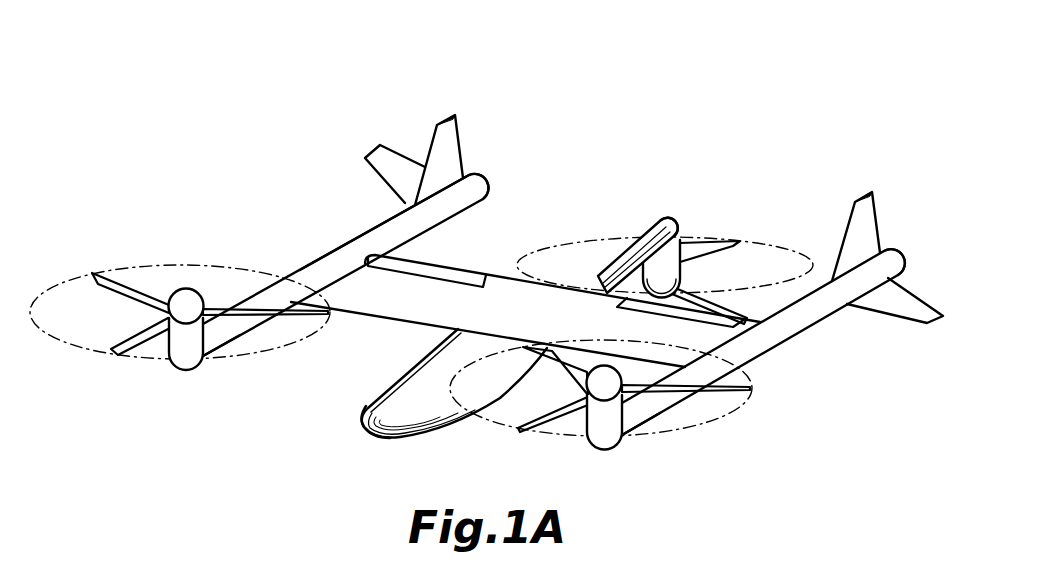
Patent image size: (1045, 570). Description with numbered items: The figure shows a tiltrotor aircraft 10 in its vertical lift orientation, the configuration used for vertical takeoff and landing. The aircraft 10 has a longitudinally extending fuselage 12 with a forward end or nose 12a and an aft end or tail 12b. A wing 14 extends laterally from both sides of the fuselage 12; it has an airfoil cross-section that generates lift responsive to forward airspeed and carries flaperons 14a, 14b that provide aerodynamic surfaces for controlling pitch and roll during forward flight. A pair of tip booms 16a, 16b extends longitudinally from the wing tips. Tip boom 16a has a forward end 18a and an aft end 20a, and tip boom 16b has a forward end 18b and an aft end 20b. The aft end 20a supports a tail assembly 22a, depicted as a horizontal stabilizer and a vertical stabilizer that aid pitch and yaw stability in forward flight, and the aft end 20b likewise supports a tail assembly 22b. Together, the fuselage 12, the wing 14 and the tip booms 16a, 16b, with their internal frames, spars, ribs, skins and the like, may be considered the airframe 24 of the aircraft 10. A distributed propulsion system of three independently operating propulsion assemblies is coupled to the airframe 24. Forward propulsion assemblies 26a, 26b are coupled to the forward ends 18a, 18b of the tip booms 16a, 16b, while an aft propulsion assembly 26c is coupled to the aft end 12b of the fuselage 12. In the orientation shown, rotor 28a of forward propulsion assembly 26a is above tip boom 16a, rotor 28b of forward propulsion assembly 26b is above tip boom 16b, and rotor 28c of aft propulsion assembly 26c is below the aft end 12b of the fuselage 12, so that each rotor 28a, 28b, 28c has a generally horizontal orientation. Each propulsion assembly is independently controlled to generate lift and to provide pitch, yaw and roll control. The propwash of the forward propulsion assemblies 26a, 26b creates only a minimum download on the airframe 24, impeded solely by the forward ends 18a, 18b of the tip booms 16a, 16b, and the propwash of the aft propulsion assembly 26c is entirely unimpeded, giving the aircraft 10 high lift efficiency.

The tiltrotor aircraft 10 is at (567, 96).
The fuselage 12 is at (405, 367).
The nose 12a is at (363, 433).
The tail 12b is at (656, 214).
The wing 14 is at (528, 298).
The flaperon 14a is at (694, 313).
The flaperon 14b is at (470, 275).
The tip boom 16a is at (758, 359).
The tip boom 16b is at (303, 270).
The forward end of tip boom 18a is at (628, 418).
The forward end of tip boom 18b is at (214, 356).
The aft end of tip boom 20a is at (896, 262).
The aft end of tip boom 20b is at (482, 187).
The tail assembly 22a is at (853, 218).
The tail assembly 22b is at (445, 140).
The airframe 24 is at (337, 248).
The forward propulsion assembly 26a is at (608, 443).
The forward propulsion assembly 26b is at (186, 357).
The aft propulsion assembly 26c is at (681, 252).
The rotor 28a is at (518, 431).
The rotor 28b is at (118, 354).
The rotor 28c is at (720, 243).